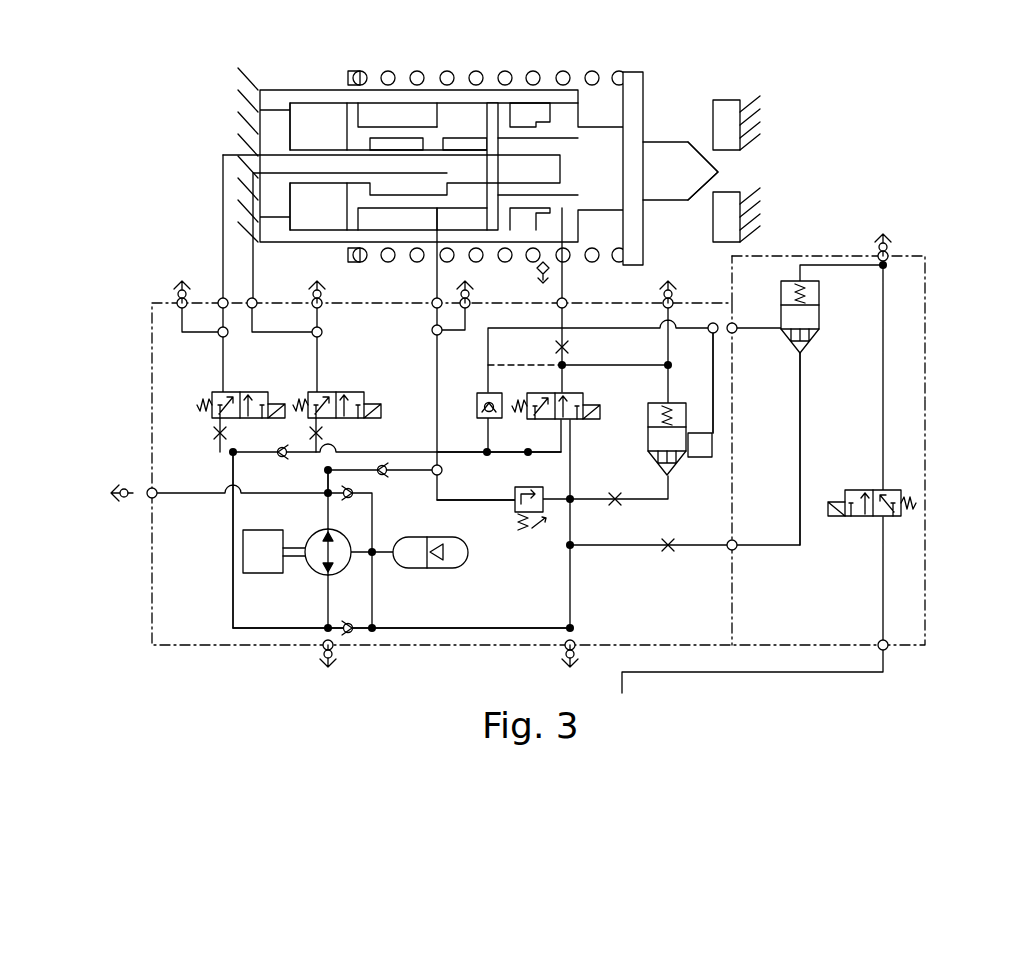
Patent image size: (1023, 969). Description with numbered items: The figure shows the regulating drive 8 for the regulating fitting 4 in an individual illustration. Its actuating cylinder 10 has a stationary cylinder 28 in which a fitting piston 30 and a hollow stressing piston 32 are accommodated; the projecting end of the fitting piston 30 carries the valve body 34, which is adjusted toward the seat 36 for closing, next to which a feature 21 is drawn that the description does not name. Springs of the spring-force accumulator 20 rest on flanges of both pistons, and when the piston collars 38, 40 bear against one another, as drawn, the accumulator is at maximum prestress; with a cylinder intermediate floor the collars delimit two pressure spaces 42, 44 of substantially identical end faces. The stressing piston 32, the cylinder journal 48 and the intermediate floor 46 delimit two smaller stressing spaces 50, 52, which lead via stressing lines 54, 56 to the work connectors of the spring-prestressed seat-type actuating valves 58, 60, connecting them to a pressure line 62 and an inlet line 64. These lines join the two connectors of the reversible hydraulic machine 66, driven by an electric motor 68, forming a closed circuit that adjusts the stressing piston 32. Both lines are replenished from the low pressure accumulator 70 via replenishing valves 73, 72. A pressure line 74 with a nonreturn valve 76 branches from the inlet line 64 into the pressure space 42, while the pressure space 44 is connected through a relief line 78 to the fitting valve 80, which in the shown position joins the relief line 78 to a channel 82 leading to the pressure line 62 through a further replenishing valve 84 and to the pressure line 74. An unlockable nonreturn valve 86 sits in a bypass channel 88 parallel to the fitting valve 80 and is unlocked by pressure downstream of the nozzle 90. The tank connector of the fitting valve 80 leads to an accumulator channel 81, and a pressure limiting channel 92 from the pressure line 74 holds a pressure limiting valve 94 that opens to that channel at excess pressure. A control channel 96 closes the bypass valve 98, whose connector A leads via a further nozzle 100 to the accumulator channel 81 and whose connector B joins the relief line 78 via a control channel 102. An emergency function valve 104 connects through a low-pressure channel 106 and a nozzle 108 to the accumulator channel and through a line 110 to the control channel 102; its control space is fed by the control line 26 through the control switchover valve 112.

The cylinder 28 is at (272, 98).
The actuating cylinder 10 is at (314, 86).
The stressing piston 32 is at (367, 133).
The stressing space 52 is at (387, 147).
The intermediate floor 46 is at (427, 112).
The spring-force accumulator 20 is at (433, 92).
The stressing space 50 is at (453, 147).
The piston collar 38 is at (490, 110).
The piston collar 40 is at (507, 110).
The fitting piston 30 is at (607, 135).
The regulating fitting 4 is at (668, 143).
The valve body 34 is at (695, 162).
The seat 36 is at (742, 104).
The workpiece gap 21 is at (730, 167).
The cylinder journal 48 is at (560, 178).
The stressing line 54 is at (222, 237).
The stressing line 56 is at (248, 283).
The pressure space 42 is at (455, 216).
The pressure space 44 is at (530, 217).
The relief line 78 is at (565, 288).
The line 110 is at (748, 328).
The actuating valve 58 is at (263, 392).
The actuating valve 60 is at (360, 392).
The pressure line 74 is at (437, 378).
The unlockable nonreturn valve 86 is at (482, 392).
The bypass channel 88 is at (492, 360).
The nozzle 90 is at (568, 350).
The channel 82 is at (470, 450).
The fitting valve 80 is at (590, 398).
The control channel 96 is at (682, 443).
The control channel 102 is at (713, 385).
The emergency function valve 104 is at (818, 296).
The regulating drive 8 is at (925, 407).
The low-pressure channel 106 is at (800, 363).
The nonreturn valve 76 is at (390, 466).
The further replenishing valve 84 is at (218, 437).
The inlet line 64 is at (323, 462).
The replenishing valve 72 is at (360, 497).
The pressure line 62 is at (233, 600).
The electric motor 68 is at (265, 574).
The hydraulic machine 66 is at (314, 560).
The replenishing valve 73 is at (348, 634).
The accumulator channel 81 is at (393, 632).
The low pressure accumulator 70 is at (417, 570).
The pressure limiting channel 92 is at (457, 502).
The pressure limiting valve 94 is at (512, 532).
The further nozzle 100 is at (616, 507).
The nozzle 108 is at (669, 552).
The bypass valve 98 is at (714, 458).
The control switchover valve 112 is at (915, 500).
The control line 26 is at (770, 673).